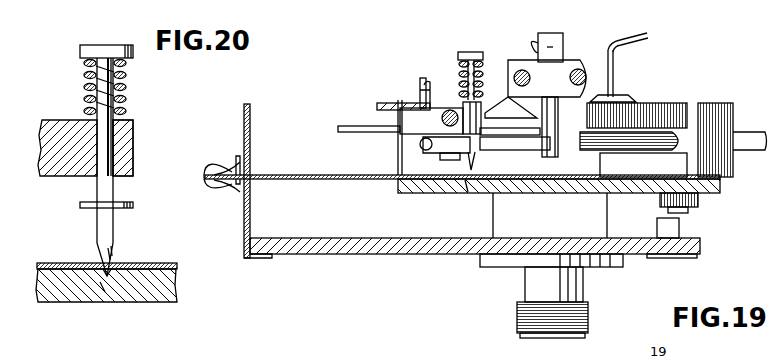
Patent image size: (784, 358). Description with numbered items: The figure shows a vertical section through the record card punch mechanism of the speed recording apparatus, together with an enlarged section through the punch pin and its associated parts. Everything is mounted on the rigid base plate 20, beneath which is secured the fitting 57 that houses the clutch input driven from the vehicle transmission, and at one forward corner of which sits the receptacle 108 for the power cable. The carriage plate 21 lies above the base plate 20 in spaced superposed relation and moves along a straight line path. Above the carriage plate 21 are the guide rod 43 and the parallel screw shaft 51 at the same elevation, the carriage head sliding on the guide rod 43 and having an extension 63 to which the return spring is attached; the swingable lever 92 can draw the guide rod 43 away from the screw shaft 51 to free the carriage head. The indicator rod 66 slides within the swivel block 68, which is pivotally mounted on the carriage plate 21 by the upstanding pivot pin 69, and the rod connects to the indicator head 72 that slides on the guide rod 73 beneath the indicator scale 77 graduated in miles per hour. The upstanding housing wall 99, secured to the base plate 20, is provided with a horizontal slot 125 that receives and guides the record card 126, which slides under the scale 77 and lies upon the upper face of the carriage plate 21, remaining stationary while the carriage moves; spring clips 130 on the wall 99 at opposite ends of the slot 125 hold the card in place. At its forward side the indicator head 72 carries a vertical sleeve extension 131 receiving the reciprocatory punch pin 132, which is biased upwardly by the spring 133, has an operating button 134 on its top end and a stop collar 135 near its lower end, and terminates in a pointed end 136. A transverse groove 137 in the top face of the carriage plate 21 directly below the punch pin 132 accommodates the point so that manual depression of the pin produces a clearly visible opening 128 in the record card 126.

In FIG. 19, the base plate 20 is at (362, 250).
In FIG. 20, the carriage plate 21 is at (60, 295).
In FIG. 19, the carriage plate 21 is at (424, 188).
In FIG. 19, the guide rod 43 is at (518, 68).
In FIG. 19, the screw shaft 51 is at (610, 60).
In FIG. 19, the fitting 57 is at (518, 320).
In FIG. 19, the extension 63 is at (552, 38).
In FIG. 19, the indicator arm or rod 66 is at (632, 135).
In FIG. 19, the swivel block 68 is at (716, 112).
In FIG. 19, the pivot pin 69 is at (690, 212).
In FIG. 20, the indicator head 72 is at (50, 125).
In FIG. 19, the guide rod 73 is at (432, 115).
In FIG. 19, the indicator scale 77 is at (386, 106).
In FIG. 19, the swingable lever 92 is at (352, 128).
In FIG. 19, the housing wall 99 is at (244, 118).
In FIG. 19, the receptacle 108 is at (660, 228).
In FIG. 19, the horizontal slot 125 is at (250, 175).
In FIG. 20, the record card 126 is at (52, 265).
In FIG. 19, the record card 126 is at (320, 180).
In FIG. 20, the record mark or opening 128 is at (97, 265).
In FIG. 19, the spring clips 130 is at (226, 176).
In FIG. 20, the vertical sleeve extension 131 is at (128, 150).
In FIG. 19, the vertical sleeve extension 131 is at (478, 120).
In FIG. 20, the punch pin 132 is at (100, 114).
In FIG. 19, the punch pin 132 is at (462, 82).
In FIG. 20, the spring 133 is at (127, 73).
In FIG. 19, the spring 133 is at (470, 70).
In FIG. 20, the operating button 134 is at (100, 48).
In FIG. 19, the operating button 134 is at (468, 52).
In FIG. 20, the stop collar 135 is at (130, 208).
In FIG. 20, the pointed lower end 136 is at (107, 258).
In FIG. 19, the pointed lower end 136 is at (462, 165).
In FIG. 20, the groove 137 is at (100, 282).
In FIG. 19, the groove 137 is at (466, 182).